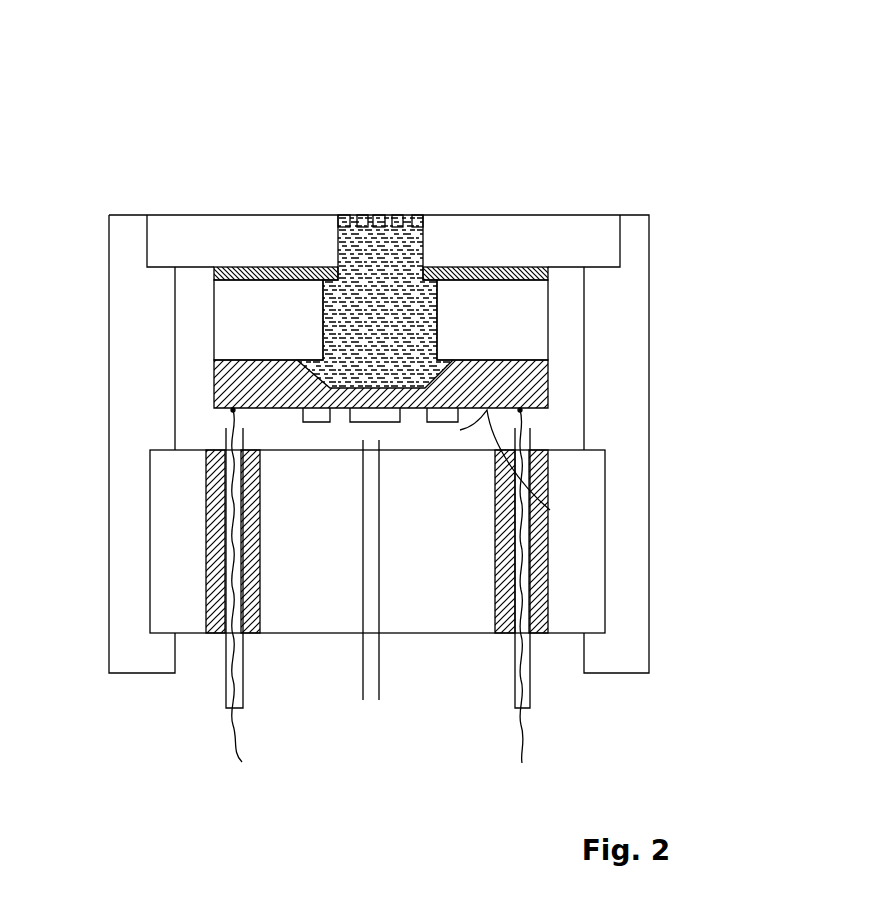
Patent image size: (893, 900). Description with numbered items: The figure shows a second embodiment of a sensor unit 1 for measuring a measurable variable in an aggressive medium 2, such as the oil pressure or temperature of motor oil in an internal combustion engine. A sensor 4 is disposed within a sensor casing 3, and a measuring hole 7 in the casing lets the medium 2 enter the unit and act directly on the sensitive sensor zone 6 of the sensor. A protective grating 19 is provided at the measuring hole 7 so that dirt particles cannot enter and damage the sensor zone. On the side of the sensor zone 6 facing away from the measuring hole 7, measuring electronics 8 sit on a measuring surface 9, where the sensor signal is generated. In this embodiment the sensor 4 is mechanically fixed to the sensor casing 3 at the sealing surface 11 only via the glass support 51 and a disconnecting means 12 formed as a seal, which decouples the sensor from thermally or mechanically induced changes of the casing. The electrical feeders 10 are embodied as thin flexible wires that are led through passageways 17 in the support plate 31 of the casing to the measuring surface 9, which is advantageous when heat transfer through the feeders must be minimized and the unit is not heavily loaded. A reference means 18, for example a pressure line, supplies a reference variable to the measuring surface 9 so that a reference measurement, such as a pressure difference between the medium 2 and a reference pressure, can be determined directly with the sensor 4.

The sensor unit 1 is at (231, 124).
The aggressive medium 2 is at (397, 255).
The sensor casing 3 is at (480, 467).
The sensor 4 is at (97, 268).
The sensor zone 6 is at (213, 402).
The measuring hole 7 is at (400, 232).
The measuring electronics 8 is at (370, 412).
The measuring surface 9 is at (550, 510).
The electrical feeder 10 is at (242, 762).
The sealing surface 11 is at (240, 267).
The disconnecting means 12 is at (500, 277).
The passageway 17 is at (530, 707).
The reference means 18 is at (377, 707).
The protective grating 19 is at (377, 215).
The support plate 31 is at (433, 623).
The support 51 is at (528, 323).